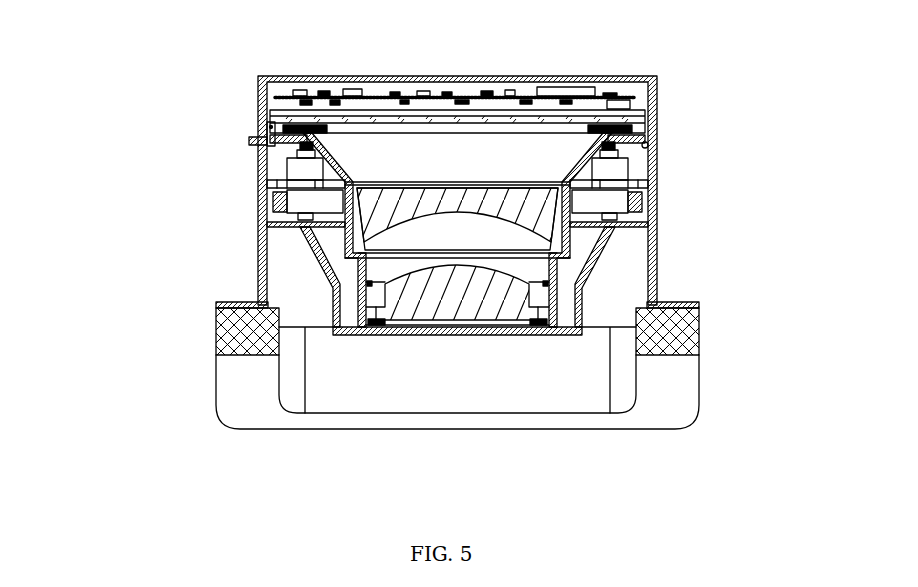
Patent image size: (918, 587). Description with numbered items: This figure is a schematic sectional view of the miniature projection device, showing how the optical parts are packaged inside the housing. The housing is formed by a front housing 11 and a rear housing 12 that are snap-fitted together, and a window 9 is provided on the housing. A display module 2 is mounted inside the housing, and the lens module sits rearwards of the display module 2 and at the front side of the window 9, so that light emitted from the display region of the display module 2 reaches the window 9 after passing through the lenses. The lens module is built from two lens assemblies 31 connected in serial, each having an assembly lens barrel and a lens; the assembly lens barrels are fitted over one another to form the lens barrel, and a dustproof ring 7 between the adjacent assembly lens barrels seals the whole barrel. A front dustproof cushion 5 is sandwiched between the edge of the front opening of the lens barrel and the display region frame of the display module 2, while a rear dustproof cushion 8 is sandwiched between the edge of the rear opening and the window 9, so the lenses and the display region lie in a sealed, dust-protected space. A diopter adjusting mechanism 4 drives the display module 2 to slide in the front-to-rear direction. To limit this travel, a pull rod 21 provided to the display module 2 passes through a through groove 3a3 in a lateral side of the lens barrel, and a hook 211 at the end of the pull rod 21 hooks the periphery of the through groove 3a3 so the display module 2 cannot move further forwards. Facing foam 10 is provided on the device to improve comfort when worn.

The display module 2 is at (455, 123).
The front dustproof cushion 5 is at (378, 130).
The pull rod 21 is at (260, 123).
The hook 211 is at (258, 150).
The lens assembly 31 is at (345, 220).
The through groove 3a3 is at (653, 148).
The front housing 11 is at (655, 190).
The diopter adjusting mechanism 4 is at (607, 200).
The rear housing 12 is at (597, 262).
The dustproof ring 7 is at (560, 290).
The rear dustproof cushion 8 is at (373, 337).
The window 9 is at (443, 330).
The facing foam 10 is at (673, 383).